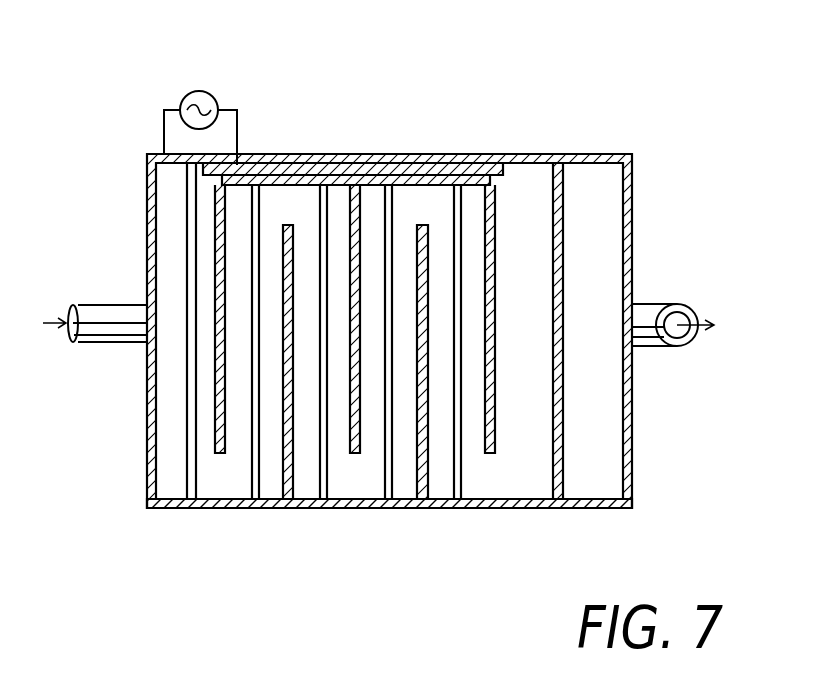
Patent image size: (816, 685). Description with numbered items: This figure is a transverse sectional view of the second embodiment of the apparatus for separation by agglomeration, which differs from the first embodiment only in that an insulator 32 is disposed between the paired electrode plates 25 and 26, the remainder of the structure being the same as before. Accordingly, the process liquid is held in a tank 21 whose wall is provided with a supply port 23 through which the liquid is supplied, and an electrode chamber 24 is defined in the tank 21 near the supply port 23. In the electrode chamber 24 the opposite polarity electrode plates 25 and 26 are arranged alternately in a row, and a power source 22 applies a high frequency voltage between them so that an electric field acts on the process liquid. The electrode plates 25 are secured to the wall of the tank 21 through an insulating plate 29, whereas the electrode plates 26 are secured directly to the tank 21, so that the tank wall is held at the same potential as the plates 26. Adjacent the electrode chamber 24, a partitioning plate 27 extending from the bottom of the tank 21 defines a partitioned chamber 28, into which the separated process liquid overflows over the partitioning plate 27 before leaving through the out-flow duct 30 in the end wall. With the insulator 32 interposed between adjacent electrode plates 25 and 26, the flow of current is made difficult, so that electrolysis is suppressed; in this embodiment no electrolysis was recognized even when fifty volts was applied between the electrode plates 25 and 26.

The housing 21 is at (590, 158).
The AC power source 22 is at (195, 90).
The gas inlet pipe 23 is at (100, 325).
The bottom electrode wall 24 is at (350, 470).
The electrode plate 25 is at (213, 272).
The electrode plate 26 is at (283, 262).
The partition wall 27 is at (547, 300).
The outlet chamber 28 is at (593, 193).
The dielectric layer 29 is at (438, 165).
The gas outlet pipe 30 is at (677, 307).
The insulator 32 is at (318, 238).